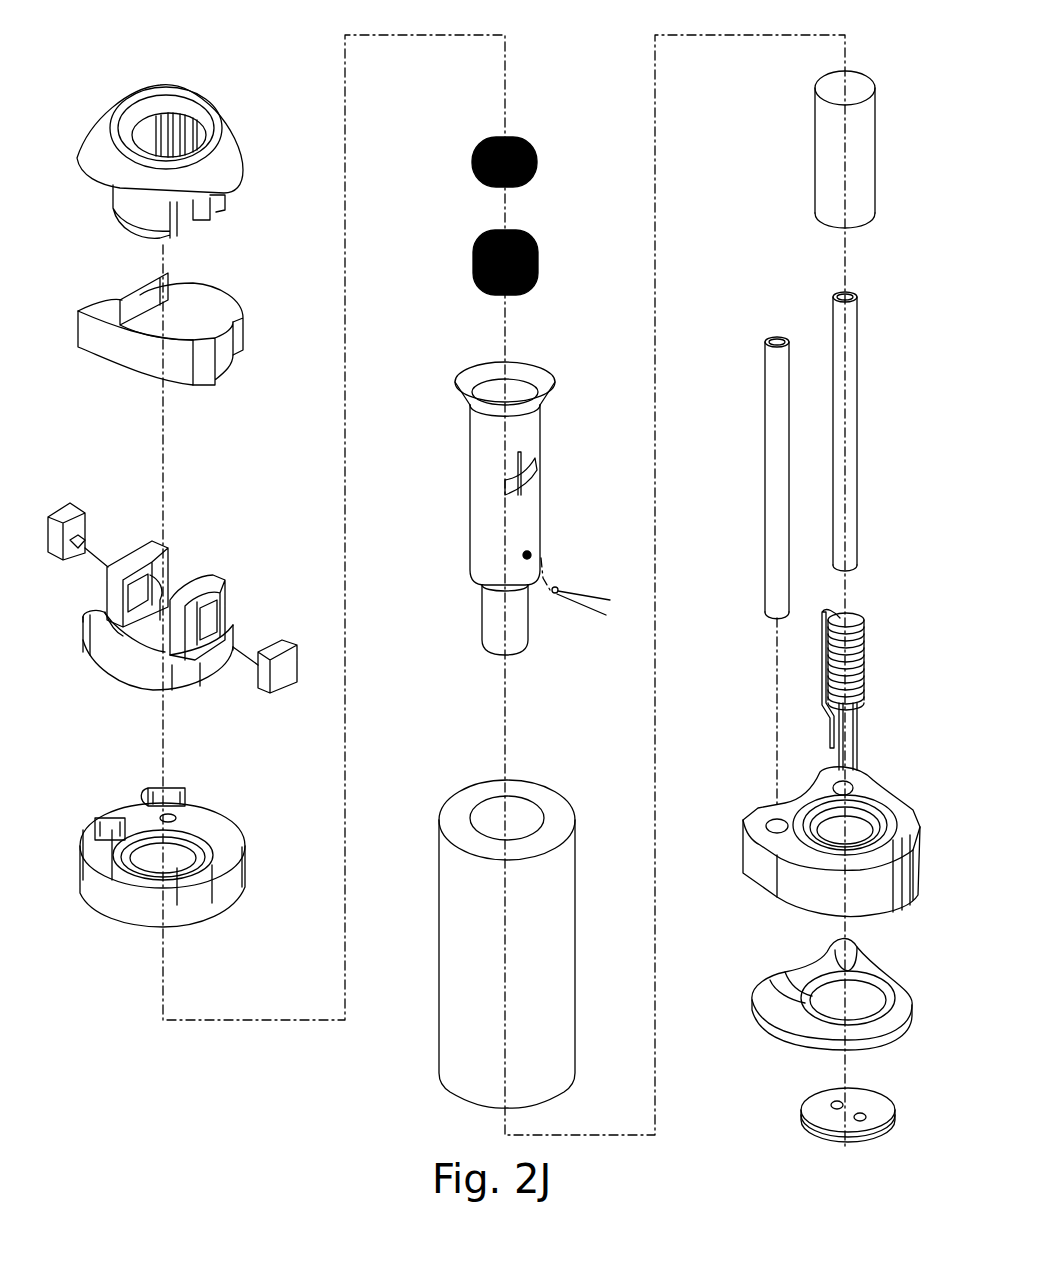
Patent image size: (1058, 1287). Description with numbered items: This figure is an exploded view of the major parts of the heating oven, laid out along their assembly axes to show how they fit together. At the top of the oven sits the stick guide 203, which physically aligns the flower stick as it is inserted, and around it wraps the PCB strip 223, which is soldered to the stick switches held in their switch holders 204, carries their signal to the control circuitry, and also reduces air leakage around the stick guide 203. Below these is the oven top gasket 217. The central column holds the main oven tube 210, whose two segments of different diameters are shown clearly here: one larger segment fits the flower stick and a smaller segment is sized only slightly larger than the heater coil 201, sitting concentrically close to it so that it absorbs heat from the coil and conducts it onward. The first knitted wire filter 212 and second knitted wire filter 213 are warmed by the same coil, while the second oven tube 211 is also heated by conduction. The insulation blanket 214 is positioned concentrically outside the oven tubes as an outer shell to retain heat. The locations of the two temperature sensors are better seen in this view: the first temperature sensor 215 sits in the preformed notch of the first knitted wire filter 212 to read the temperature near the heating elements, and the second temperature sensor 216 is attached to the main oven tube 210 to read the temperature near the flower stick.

The heater coil 201 is at (860, 652).
The stick guide 203 is at (222, 155).
The switch holder 204 is at (235, 637).
The main oven tube 210 is at (470, 490).
The second oven tube 211 is at (872, 186).
The first knitted wire filter 212 is at (540, 272).
The second knitted wire filter 213 is at (540, 162).
The insulation blanket 214 is at (575, 892).
The first temperature sensor 215 is at (570, 598).
The second temperature sensor 216 is at (520, 453).
The oven top gasket 217 is at (242, 863).
The PCB strip 223 is at (82, 332).